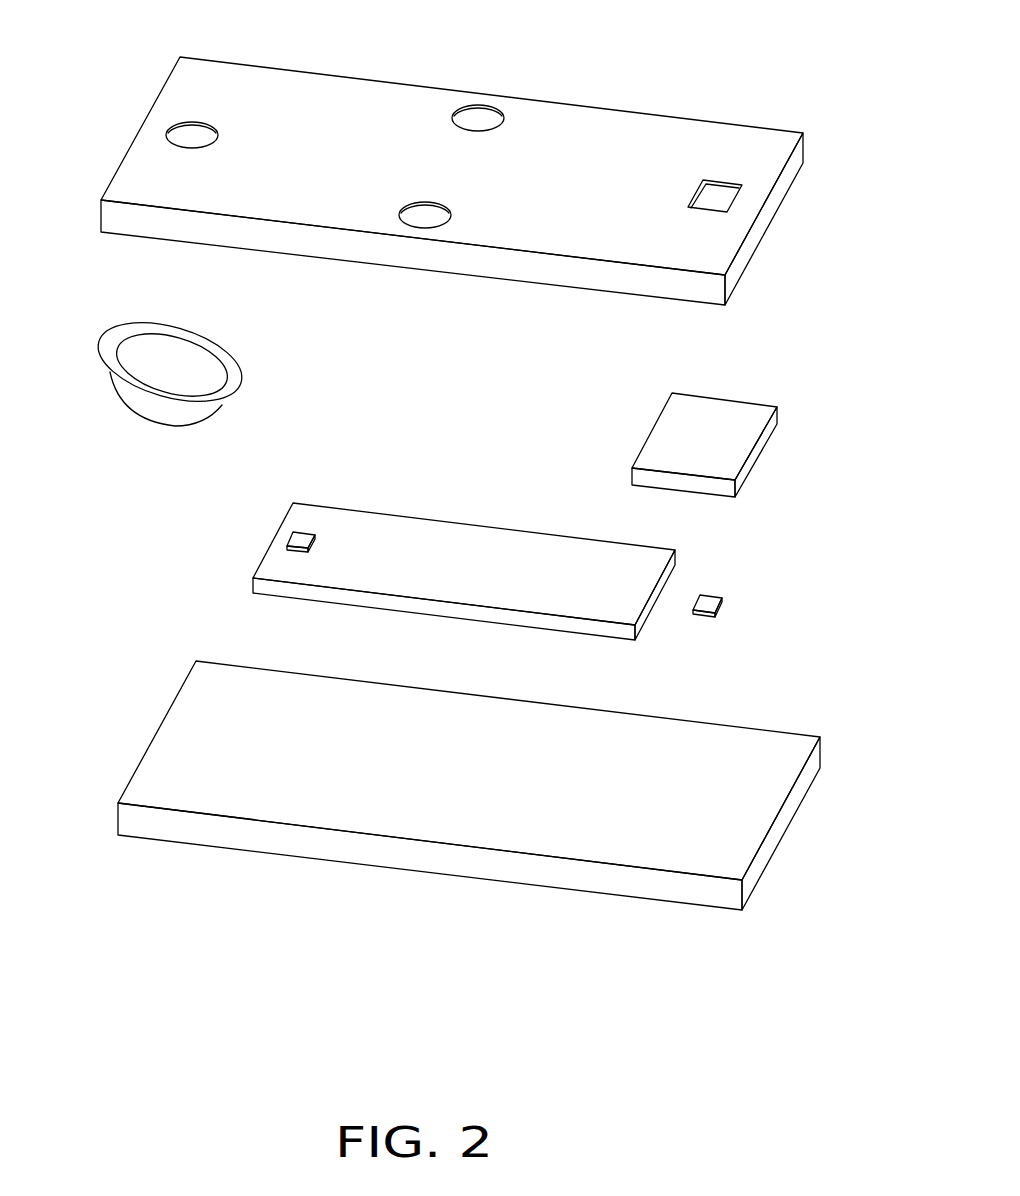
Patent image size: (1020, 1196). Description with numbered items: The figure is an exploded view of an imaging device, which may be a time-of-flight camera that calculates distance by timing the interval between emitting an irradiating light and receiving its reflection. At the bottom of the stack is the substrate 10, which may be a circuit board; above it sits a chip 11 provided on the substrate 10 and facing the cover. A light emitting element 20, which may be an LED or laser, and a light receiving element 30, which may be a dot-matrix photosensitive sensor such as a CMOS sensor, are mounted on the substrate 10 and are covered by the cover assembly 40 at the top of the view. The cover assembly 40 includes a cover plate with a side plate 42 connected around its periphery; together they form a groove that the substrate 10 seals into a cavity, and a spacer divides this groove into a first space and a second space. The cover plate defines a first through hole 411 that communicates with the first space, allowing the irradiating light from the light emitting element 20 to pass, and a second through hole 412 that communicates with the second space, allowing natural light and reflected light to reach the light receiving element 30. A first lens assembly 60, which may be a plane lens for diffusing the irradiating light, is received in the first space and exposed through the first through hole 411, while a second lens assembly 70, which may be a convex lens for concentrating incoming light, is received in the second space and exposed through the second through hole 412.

The substrate 10 is at (177, 737).
The chip 11 is at (285, 568).
The light emitting element 20 is at (717, 608).
The light receiving element 30 is at (305, 537).
The cover assembly 40 is at (373, 105).
The side plate 42 is at (797, 162).
The first through hole 411 is at (724, 200).
The second through hole 412 is at (168, 131).
The first lens assembly 60 is at (665, 439).
The second lens assembly 70 is at (198, 367).